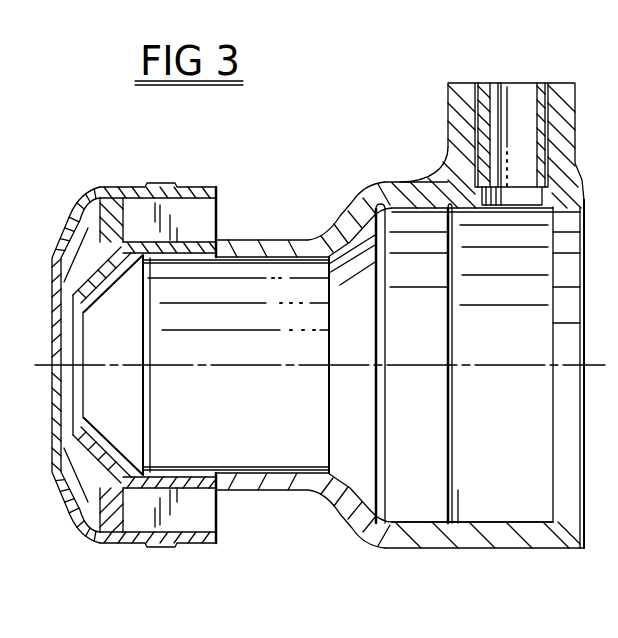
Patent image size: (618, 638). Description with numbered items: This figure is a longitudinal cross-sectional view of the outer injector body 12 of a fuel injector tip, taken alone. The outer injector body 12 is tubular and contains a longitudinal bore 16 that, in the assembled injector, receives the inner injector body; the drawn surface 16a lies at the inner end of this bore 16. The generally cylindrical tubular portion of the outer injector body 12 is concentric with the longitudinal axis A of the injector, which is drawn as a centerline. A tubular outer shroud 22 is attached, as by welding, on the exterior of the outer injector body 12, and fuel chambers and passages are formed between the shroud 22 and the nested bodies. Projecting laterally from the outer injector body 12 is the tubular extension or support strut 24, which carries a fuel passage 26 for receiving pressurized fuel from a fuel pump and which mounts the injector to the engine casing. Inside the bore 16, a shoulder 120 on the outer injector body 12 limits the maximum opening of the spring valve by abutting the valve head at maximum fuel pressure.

The outer injector body 12 is at (268, 239).
The longitudinal bore 16 is at (516, 473).
The inner bottom wall surface of receptacle 16a is at (411, 521).
The tubular outer shroud 22 is at (192, 187).
The lateral tubular extension or support strut 24 is at (448, 110).
The fuel passage 26 is at (522, 92).
The shoulder 120 is at (387, 514).
The longitudinal axis A is at (247, 367).